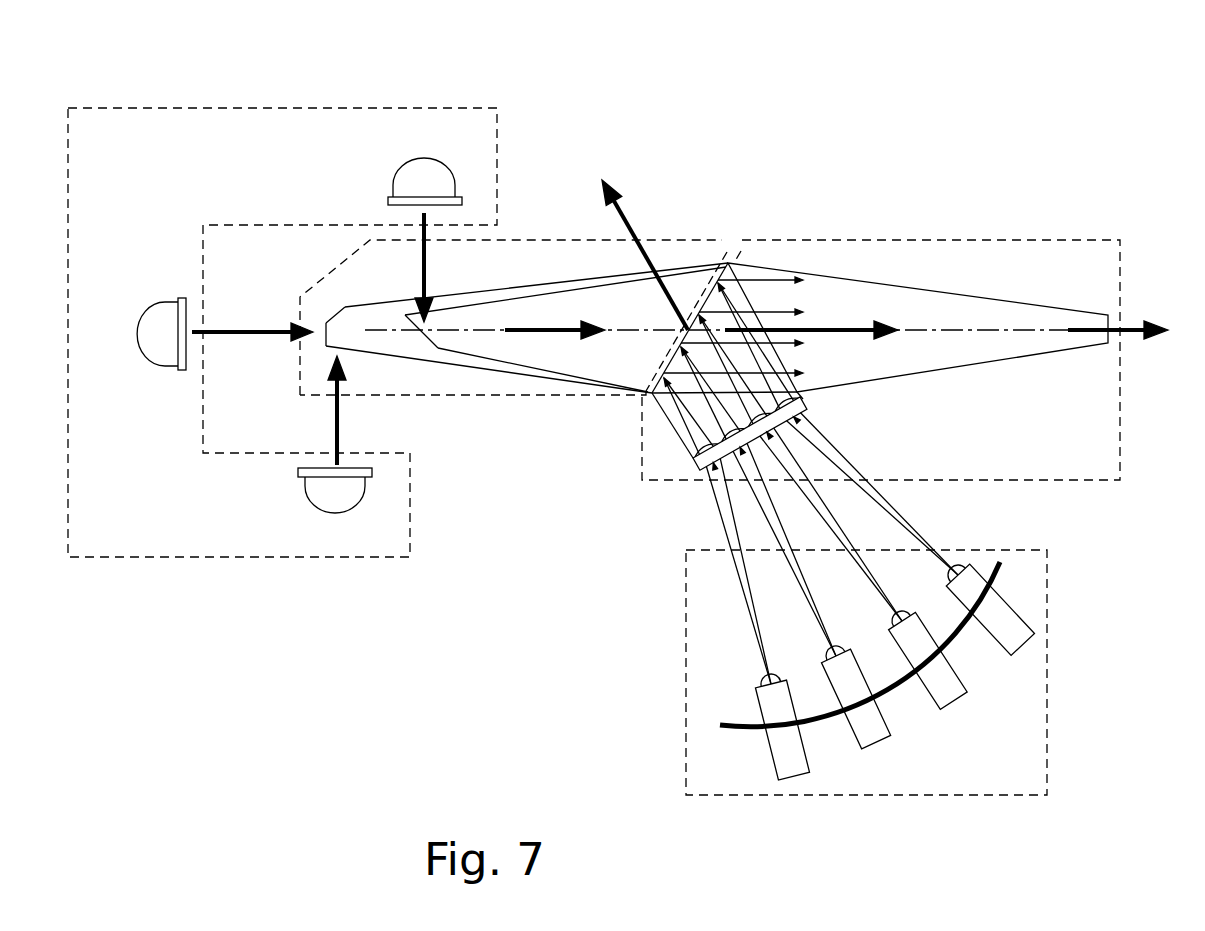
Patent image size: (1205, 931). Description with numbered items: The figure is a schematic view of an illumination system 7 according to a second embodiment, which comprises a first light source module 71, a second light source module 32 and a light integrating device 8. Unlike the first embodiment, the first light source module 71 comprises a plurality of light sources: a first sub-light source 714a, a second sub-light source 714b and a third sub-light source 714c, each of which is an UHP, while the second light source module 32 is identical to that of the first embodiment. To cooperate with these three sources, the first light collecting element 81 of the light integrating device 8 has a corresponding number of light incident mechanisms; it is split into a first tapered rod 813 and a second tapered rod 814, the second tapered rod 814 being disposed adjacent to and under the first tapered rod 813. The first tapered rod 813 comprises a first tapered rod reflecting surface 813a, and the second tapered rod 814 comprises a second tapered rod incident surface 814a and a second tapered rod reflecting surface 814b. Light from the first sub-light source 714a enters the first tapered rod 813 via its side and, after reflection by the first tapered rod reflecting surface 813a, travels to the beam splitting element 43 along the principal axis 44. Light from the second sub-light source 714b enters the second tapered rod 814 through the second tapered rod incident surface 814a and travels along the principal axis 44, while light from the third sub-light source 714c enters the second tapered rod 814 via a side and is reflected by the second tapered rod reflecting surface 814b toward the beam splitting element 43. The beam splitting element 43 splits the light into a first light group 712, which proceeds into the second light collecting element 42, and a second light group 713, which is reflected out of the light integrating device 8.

The illumination system 7 is at (636, 68).
The light integrating device 8 is at (808, 148).
The first light source module 71 is at (315, 107).
The first light collecting element 81 is at (375, 397).
The second light collecting element 42 is at (942, 241).
The second light source module 32 is at (686, 628).
The first sub-light source 714a is at (403, 168).
The second sub-light source 714b is at (143, 357).
The third sub-light source 714c is at (320, 508).
The first tapered rod 813 is at (546, 283).
The first tapered rod reflecting surface 813a is at (428, 330).
The second tapered rod 814 is at (445, 366).
The second tapered rod incident surface 814a is at (325, 347).
The second tapered rod reflecting surface 814b is at (333, 312).
The beam splitting element 43 is at (645, 388).
The principal axis 44 is at (978, 342).
The first light group 712 is at (836, 342).
The second light group 713 is at (643, 252).